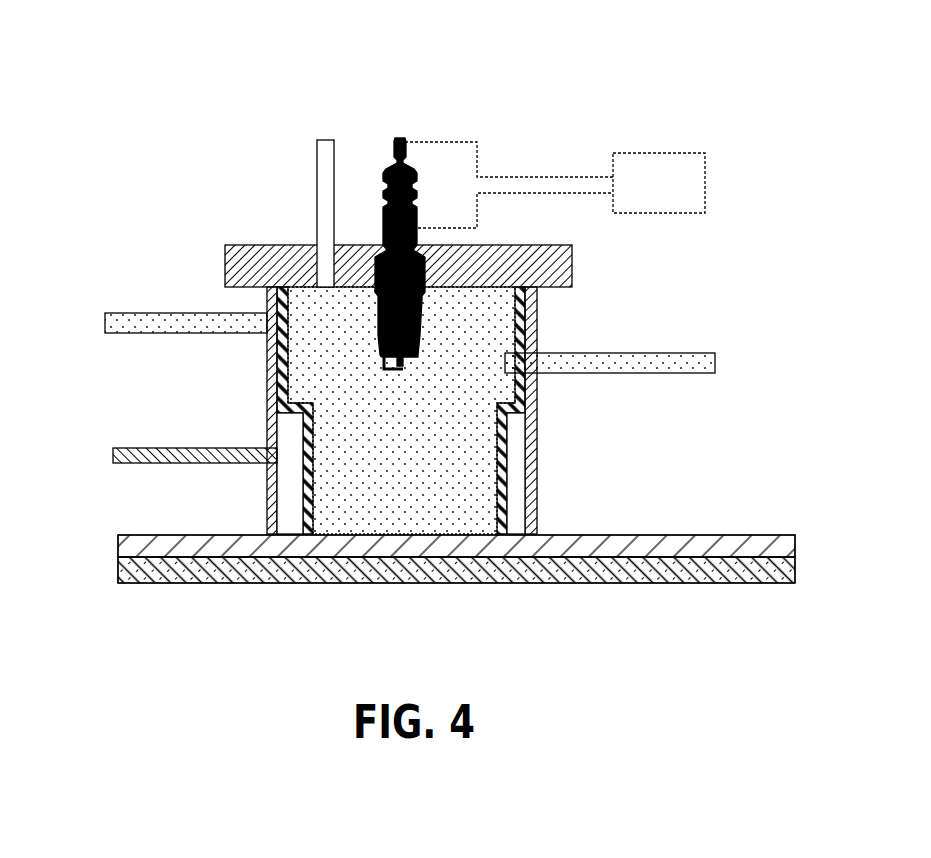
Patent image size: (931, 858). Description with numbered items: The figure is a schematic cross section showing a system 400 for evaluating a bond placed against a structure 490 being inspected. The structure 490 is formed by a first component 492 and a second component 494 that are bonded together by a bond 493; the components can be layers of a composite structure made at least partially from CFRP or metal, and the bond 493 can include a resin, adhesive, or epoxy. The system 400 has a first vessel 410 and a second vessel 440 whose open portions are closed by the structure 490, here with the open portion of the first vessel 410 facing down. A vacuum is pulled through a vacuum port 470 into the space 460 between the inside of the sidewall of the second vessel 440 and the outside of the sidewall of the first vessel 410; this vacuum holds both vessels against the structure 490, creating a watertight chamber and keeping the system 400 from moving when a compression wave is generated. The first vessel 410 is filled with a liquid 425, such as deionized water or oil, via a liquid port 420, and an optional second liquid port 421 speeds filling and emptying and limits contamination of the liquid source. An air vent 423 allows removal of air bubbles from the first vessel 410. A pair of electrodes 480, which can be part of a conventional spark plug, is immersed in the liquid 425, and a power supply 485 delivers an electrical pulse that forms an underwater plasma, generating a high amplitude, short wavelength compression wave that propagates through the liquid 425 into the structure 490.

The system for evaluating a bond 400 is at (352, 38).
The first vessel 410 is at (459, 410).
The liquid port 420 is at (705, 352).
The second liquid port 421 is at (105, 323).
The air vent 423 is at (316, 158).
The liquid 425 is at (345, 398).
The second vessel 440 is at (538, 473).
The space 460 is at (513, 516).
The vacuum port 470 is at (112, 457).
The pair of electrodes 480 is at (403, 363).
The power supply 485 is at (555, 185).
The structure 490 is at (436, 574).
The first component 492 is at (118, 546).
The bond 493 is at (118, 562).
The second component 494 is at (118, 583).